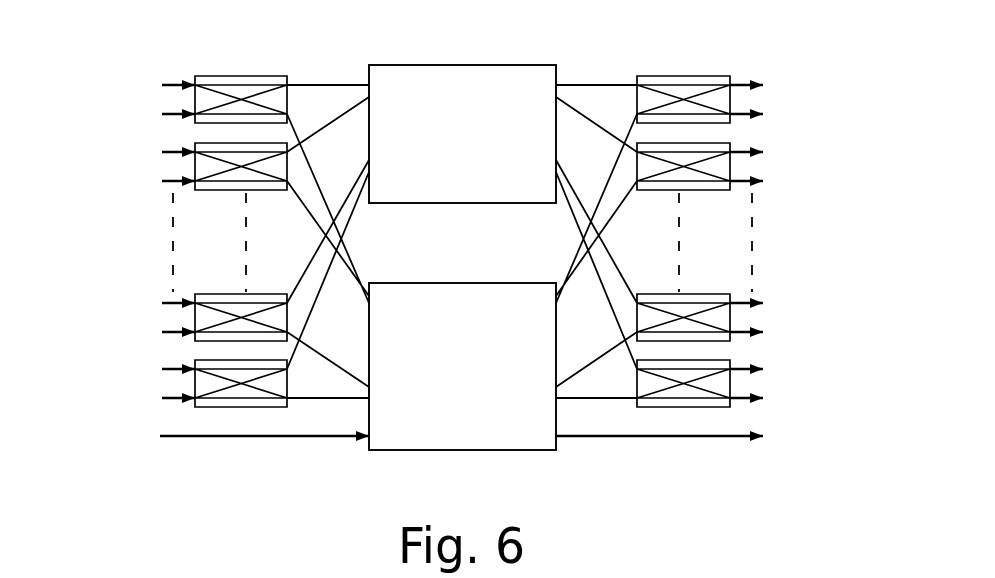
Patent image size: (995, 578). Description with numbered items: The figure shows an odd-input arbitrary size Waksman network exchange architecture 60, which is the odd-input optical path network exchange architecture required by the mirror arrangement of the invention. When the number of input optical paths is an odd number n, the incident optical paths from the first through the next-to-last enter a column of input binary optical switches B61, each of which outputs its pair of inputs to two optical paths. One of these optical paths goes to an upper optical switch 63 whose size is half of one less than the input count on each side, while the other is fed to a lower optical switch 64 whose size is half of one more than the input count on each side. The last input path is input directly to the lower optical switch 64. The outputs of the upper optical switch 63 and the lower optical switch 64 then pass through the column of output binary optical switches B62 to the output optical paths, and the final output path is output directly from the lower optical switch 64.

The odd-input arbitrary size Waksman network exchange architecture 60 is at (729, 60).
The upper optical switch 63 is at (472, 65).
The lower optical switch 64 is at (468, 450).
The binary optical switches B61 is at (195, 384).
The binary optical switches B62 is at (732, 100).